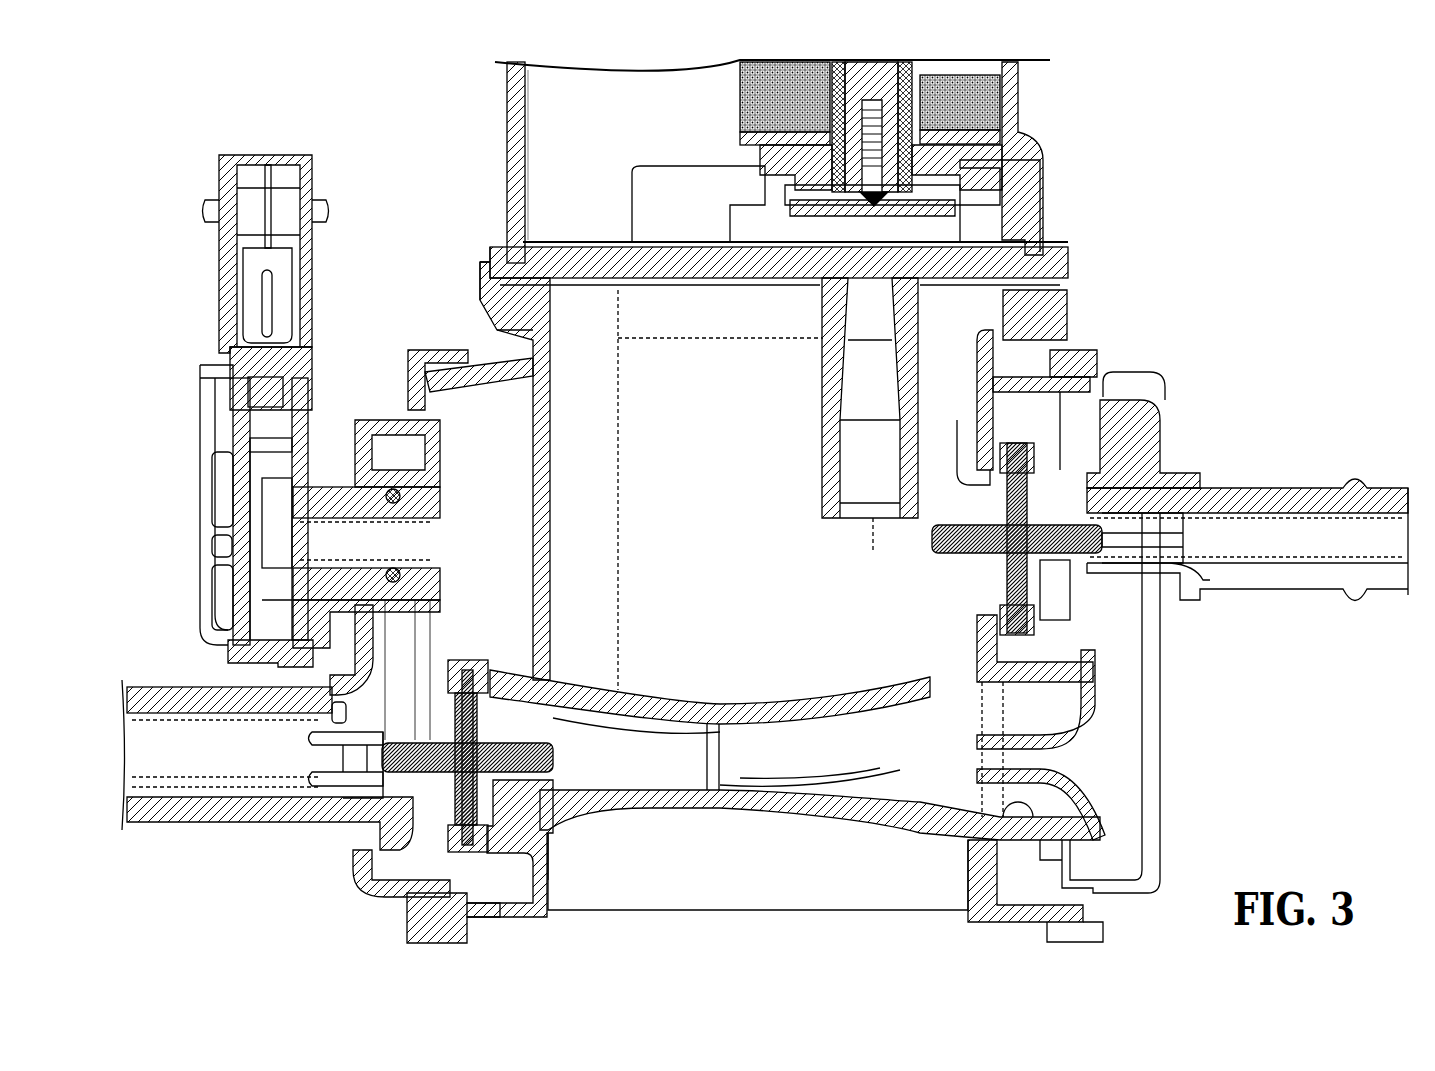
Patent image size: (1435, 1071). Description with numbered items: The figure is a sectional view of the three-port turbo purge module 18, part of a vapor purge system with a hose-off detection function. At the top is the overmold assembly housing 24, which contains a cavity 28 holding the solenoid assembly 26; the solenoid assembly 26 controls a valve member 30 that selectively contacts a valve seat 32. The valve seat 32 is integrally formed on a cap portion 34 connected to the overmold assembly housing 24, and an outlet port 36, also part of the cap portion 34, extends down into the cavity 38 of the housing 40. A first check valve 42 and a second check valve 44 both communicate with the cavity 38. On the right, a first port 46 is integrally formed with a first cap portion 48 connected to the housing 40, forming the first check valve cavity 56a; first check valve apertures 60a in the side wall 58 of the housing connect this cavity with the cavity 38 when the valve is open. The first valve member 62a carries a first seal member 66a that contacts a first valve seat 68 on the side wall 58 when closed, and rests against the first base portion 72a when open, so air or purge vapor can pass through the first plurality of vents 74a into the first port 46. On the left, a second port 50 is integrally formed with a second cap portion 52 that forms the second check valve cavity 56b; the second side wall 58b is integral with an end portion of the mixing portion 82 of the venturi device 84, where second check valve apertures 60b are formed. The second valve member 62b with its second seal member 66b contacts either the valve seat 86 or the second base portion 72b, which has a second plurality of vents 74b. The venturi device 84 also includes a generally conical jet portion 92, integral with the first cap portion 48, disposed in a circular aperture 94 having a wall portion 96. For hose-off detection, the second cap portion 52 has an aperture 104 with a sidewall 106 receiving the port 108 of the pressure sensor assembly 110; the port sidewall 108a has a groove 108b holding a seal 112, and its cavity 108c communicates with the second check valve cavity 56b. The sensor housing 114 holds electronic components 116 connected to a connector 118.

The three-port turbo purge module 18 is at (1240, 128).
The overmold assembly housing 24 is at (507, 95).
The solenoid assembly 26 is at (1005, 112).
The cavity 28 is at (535, 157).
The valve member 30 is at (830, 208).
The valve seat 32 is at (870, 190).
The cap portion 34 is at (490, 262).
The outlet port 36 is at (860, 380).
The cavity 38 is at (560, 352).
The housing 40 is at (1005, 345).
The first check valve 42 is at (1030, 425).
The second check valve 44 is at (500, 895).
The first port 46 is at (1378, 487).
The first cap portion 48 is at (1125, 395).
The second port 50 is at (285, 825).
The second cap portion 52 is at (388, 405).
The first check valve cavity 56a is at (1045, 600).
The second check valve cavity 56b is at (460, 890).
The chamber wall 58 is at (978, 390).
The second side wall 58b is at (552, 400).
The first check valve apertures 60a is at (960, 478).
The second check valve apertures 60b is at (575, 800).
The first valve member 62a is at (912, 540).
The second valve member 62b is at (510, 705).
The first seal member 66a is at (1030, 455).
The second seal member 66b is at (450, 860).
The first valve seat 68 is at (1100, 680).
The first base portion 72a is at (1030, 510).
The second base portion 72b is at (420, 820).
The first plurality of vents 74a is at (1180, 550).
The second plurality of vents 74b is at (330, 735).
The mixing portion 82 is at (690, 810).
The venturi device 84 is at (865, 880).
The valve seat 86 is at (480, 670).
The jet portion 92 is at (1125, 785).
The circular aperture 94 is at (1005, 845).
The wall portion 96 is at (1060, 870).
The aperture 104 is at (440, 505).
The sidewall 106 is at (400, 490).
The port 108 is at (430, 590).
The sidewall 108a is at (350, 578).
The groove 108b is at (350, 410).
The cavity 108c is at (405, 543).
The pressure sensor assembly 110 is at (200, 472).
The seal 112 is at (340, 625).
The housing 114 is at (195, 400).
The electronic components 116 is at (250, 505).
The connector 118 is at (222, 185).